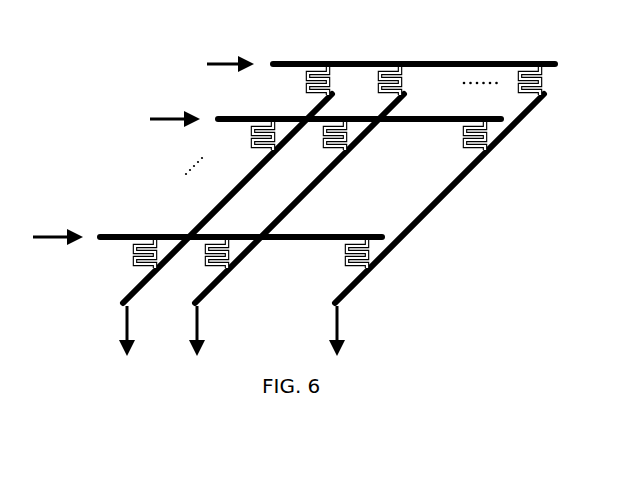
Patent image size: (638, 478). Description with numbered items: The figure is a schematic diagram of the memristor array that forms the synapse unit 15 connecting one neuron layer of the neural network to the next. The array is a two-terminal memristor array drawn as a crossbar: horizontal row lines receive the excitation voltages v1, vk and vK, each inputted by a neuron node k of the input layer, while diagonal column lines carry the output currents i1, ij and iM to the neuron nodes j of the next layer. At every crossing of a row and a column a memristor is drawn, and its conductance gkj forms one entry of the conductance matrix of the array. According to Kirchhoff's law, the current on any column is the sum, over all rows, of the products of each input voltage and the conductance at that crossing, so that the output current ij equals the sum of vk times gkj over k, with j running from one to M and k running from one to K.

The synapse unit 15 is at (294, 185).
The excitation voltage v1 is at (381, 58).
The excitation voltage vk is at (325, 109).
The excitation voltage vK is at (207, 228).
The output current i1 is at (215, 225).
The output current ij is at (292, 225).
The output current iM is at (423, 225).
The conductance matrix gkj is at (358, 137).